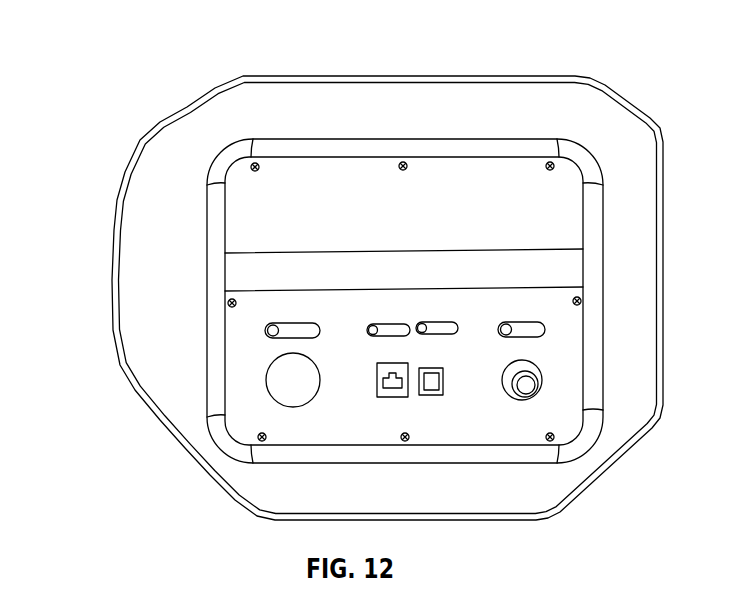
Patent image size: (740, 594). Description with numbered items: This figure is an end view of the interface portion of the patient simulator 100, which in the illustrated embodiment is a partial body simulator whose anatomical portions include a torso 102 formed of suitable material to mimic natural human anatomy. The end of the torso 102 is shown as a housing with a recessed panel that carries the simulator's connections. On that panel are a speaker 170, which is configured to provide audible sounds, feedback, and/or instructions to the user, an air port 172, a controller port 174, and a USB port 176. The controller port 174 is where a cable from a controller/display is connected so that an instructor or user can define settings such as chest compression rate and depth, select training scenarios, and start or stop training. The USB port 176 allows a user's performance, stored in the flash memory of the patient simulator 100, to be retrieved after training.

The patient simulator 100 is at (108, 34).
The torso 102 is at (338, 75).
The speaker 170 is at (265, 380).
The air port 172 is at (503, 368).
The controller port 174 is at (382, 398).
The USB port 176 is at (432, 398).